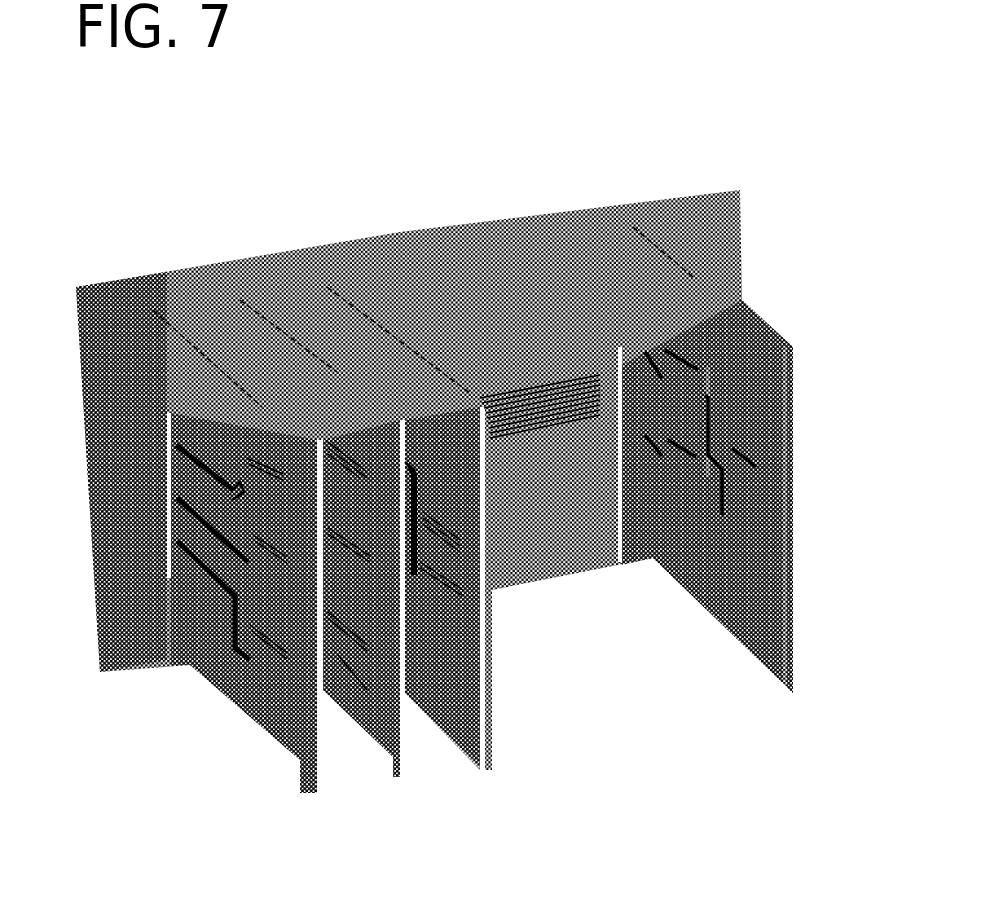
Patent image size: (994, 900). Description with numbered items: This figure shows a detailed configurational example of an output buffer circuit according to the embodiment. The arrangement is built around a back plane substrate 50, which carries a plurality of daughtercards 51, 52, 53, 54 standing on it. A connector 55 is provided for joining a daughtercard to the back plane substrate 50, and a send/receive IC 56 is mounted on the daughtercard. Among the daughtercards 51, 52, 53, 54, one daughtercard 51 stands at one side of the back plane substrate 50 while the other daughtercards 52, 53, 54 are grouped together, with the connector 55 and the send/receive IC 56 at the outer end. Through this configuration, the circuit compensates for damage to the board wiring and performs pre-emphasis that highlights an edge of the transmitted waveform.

The back plane substrate 50 is at (458, 260).
The daughtercard 51 is at (763, 353).
The daughtercard 52 is at (485, 740).
The daughtercard 53 is at (402, 753).
The daughtercard 54 is at (307, 750).
The connector 55 is at (147, 490).
The send/receive IC 56 is at (263, 658).